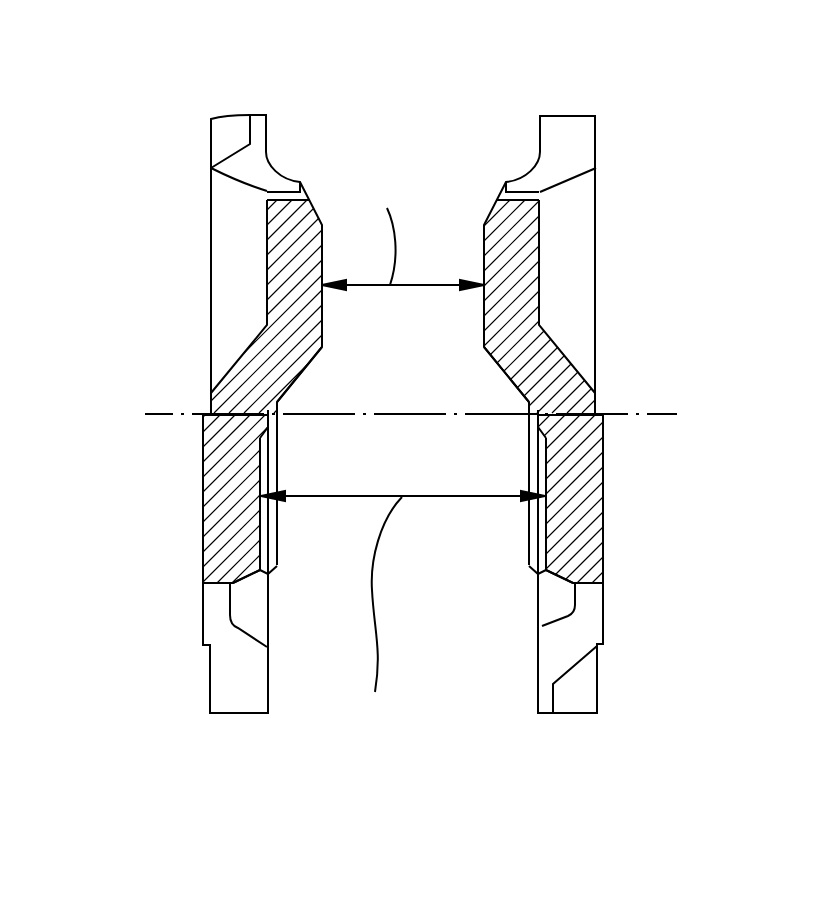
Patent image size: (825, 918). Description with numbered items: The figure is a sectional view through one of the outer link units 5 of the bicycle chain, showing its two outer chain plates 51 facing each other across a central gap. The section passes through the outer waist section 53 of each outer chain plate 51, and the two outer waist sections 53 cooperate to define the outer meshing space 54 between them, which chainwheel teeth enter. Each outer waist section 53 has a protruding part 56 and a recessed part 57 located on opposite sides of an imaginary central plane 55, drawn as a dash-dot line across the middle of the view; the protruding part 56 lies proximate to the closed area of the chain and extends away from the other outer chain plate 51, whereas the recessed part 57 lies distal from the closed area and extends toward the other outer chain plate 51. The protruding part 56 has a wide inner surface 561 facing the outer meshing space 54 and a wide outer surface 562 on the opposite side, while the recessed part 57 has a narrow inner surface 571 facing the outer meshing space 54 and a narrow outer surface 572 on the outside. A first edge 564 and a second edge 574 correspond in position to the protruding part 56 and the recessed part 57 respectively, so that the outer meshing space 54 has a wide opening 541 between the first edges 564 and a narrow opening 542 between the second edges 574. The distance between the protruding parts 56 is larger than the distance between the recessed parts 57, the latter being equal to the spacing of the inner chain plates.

The outer link unit 5 is at (725, 122).
The outer chain plate 51 is at (203, 110).
The outer waist section 53 is at (232, 422).
The outer meshing space 54 is at (347, 390).
The imaginary central plane 55 is at (640, 415).
The protruding part 56 is at (222, 522).
The recessed part 57 is at (288, 293).
The wide opening 541 is at (478, 577).
The narrow opening 542 is at (457, 202).
The wide inner surface 561 is at (548, 517).
The wide outer surface 562 is at (602, 480).
The first edge 564 is at (220, 584).
The narrow inner surface 571 is at (487, 298).
The narrow outer surface 572 is at (538, 272).
The second edge 574 is at (285, 202).